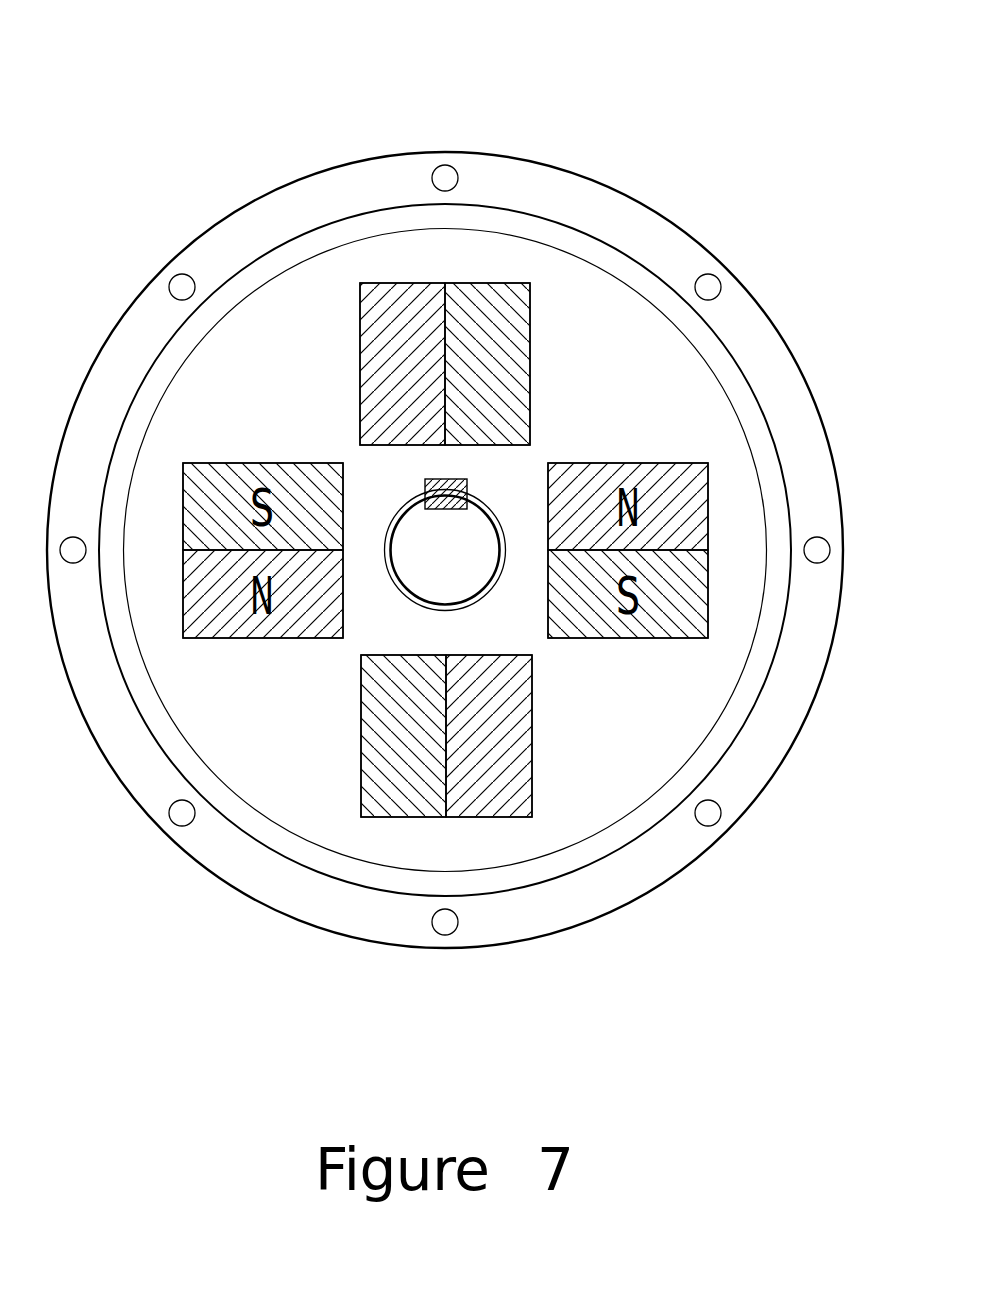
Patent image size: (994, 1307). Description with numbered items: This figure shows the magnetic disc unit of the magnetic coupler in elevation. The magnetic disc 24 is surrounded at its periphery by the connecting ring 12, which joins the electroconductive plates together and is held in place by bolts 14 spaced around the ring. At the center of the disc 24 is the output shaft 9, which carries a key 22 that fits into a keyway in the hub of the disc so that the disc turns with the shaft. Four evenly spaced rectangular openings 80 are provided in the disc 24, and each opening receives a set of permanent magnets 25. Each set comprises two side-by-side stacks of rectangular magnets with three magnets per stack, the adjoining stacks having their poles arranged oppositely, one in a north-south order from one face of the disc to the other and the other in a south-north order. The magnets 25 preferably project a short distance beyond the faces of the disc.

The connecting ring 12 is at (553, 157).
The magnetic disc 24 is at (258, 276).
The bolts 14 is at (188, 830).
The rectangular openings 80 is at (360, 423).
The permanent magnets 25 is at (522, 797).
The key 22 is at (478, 479).
The output shaft 9 is at (477, 578).